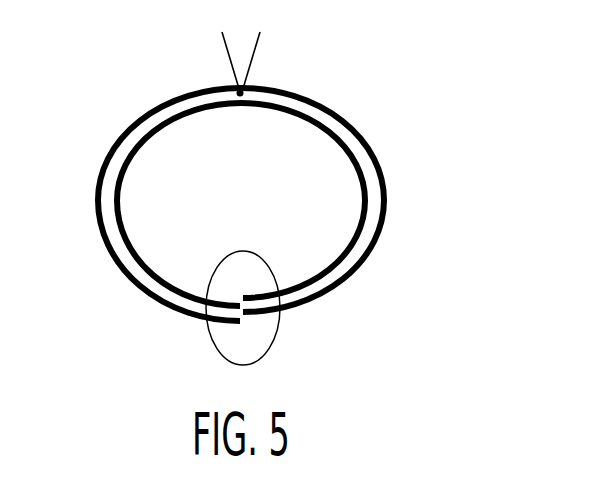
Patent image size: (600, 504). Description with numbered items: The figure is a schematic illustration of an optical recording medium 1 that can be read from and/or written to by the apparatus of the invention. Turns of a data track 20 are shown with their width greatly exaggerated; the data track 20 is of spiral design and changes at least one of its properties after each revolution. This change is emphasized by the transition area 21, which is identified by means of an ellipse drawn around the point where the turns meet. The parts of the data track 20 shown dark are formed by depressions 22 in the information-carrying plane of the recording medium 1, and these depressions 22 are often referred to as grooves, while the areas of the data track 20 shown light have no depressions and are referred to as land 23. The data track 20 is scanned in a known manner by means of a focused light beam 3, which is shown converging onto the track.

The recording medium 1 is at (169, 78).
The focused light beam 3 is at (245, 49).
The data track 20 is at (387, 178).
The transition area 21 is at (265, 354).
The depressions 22 is at (368, 138).
The land 23 is at (303, 105).